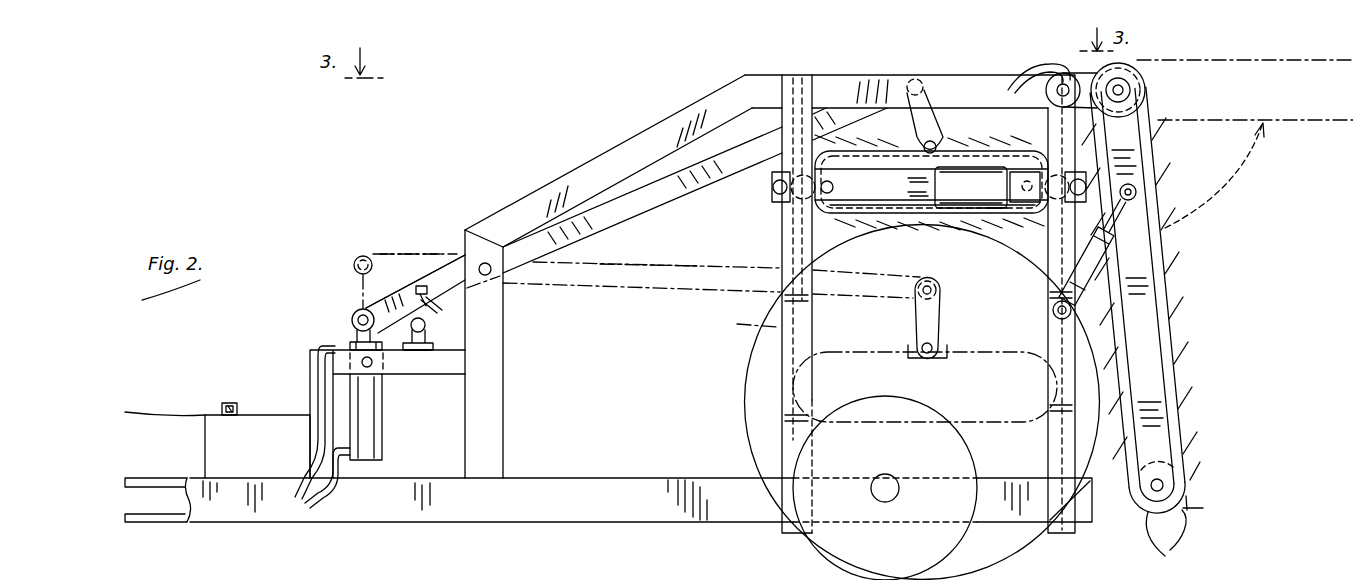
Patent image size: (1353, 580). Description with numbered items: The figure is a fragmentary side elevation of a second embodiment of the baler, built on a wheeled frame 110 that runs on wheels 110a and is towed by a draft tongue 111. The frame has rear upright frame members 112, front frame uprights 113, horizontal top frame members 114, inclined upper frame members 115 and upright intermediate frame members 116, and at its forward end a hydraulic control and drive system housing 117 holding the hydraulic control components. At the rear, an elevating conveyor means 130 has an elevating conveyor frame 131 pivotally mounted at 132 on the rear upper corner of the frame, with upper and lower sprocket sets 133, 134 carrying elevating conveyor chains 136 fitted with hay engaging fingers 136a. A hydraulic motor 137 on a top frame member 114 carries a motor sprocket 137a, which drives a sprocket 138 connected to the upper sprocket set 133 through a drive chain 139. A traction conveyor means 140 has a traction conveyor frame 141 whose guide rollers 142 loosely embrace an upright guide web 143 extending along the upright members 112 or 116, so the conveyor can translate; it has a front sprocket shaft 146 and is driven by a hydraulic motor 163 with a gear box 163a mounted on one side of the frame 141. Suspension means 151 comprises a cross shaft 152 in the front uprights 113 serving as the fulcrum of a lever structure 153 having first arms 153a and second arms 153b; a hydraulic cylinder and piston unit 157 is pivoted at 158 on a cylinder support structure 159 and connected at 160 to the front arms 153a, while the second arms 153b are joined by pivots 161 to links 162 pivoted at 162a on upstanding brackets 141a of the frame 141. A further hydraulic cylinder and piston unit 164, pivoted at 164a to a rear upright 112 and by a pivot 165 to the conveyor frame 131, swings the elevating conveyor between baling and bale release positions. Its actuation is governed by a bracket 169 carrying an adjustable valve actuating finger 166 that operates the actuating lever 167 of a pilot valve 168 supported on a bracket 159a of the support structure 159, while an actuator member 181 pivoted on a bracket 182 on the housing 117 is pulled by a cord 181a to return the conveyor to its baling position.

The wheeled frame 110 is at (705, 537).
The wheels 110a is at (948, 542).
The draft tongue 111 is at (178, 524).
The rear upright frame members 112 is at (942, 330).
The front frame uprights 113 is at (492, 413).
The horizontal top frame members 114 is at (847, 86).
The inclined upper frame members 115 is at (613, 158).
The upright intermediate frame members 116 is at (780, 262).
The hydraulic control and drive system housing 117 is at (264, 424).
The elevating conveyor means 130 is at (1220, 394).
The elevating conveyor frame 131 is at (1150, 312).
The pivotal mounting 132 is at (1138, 84).
The upper elevating conveyor sprocket set 133 is at (1148, 92).
The lower elevating conveyor sprocket set 134 is at (1188, 490).
The elevating conveyor chains 136 is at (1186, 440).
The hay engaging fingers 136a is at (1187, 538).
The hydraulic motor 137 is at (1055, 98).
The motor sprocket 137a is at (1046, 66).
The sprocket 138 is at (1160, 118).
The drive chain 139 is at (1140, 58).
The traction conveyor means 140 is at (917, 243).
The traction conveyor frame 141 is at (773, 208).
The upstanding brackets 141a is at (931, 184).
The guide rollers 142 is at (772, 190).
The upright guide web 143 is at (1042, 416).
The front sprocket shaft 146 is at (875, 175).
The suspension means 151 is at (326, 299).
The cross shaft 152 is at (486, 262).
The lever structure 153 is at (640, 292).
The first arms 153a is at (405, 250).
The second arms 153b is at (684, 272).
The hydraulic cylinder and piston unit 157 is at (378, 440).
The pivotal mounting 158 is at (371, 368).
The cylinder support structure 159 is at (422, 364).
The bracket 159a is at (435, 351).
The pivotal connection 160 is at (358, 310).
The pivots 161 is at (914, 78).
The links 162 is at (930, 105).
The link pivot 162a is at (936, 142).
The hydraulic motor 163 is at (971, 187).
The gear box 163a is at (1005, 213).
The hydraulic cylinder and piston unit 164 is at (1150, 254).
The pivotal connection 164a is at (1053, 308).
The pivot 165 is at (1140, 190).
The adjustable valve actuating finger 166 is at (432, 293).
The actuating lever 167 is at (426, 319).
The pilot valve 168 is at (422, 333).
The bracket 169 is at (455, 268).
The actuator member 181 is at (234, 403).
The cord 181a is at (150, 419).
The bracket 182 is at (225, 404).